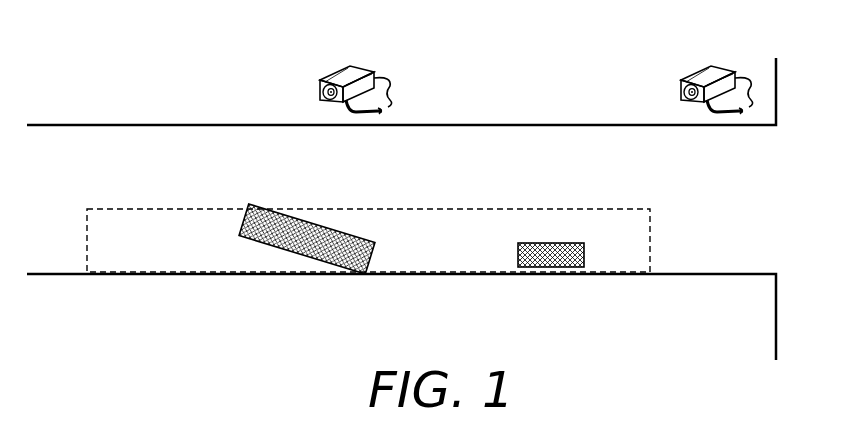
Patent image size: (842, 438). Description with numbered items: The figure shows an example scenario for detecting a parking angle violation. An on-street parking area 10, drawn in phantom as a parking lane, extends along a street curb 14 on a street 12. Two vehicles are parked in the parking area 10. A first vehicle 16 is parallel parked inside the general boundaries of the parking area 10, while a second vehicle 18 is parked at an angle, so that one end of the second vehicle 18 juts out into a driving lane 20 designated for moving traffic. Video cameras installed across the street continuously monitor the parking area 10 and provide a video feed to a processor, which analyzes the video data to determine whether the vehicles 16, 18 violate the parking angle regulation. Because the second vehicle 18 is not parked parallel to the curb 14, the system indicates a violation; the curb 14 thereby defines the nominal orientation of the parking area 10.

The on-street parking area 10 is at (672, 238).
The street 12 is at (700, 170).
The street curb 14 is at (432, 265).
The first vehicle 16 is at (556, 267).
The second vehicle 18 is at (300, 250).
The driving lane 20 is at (233, 189).